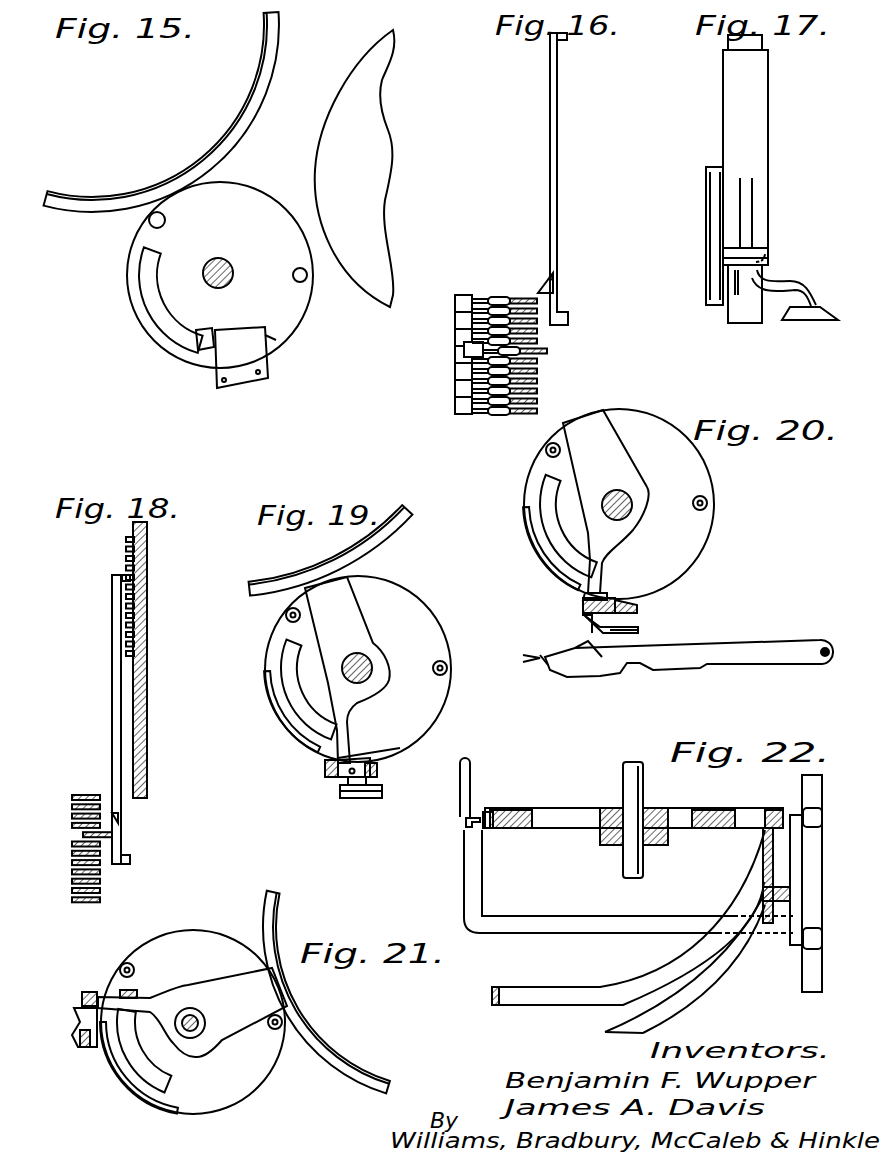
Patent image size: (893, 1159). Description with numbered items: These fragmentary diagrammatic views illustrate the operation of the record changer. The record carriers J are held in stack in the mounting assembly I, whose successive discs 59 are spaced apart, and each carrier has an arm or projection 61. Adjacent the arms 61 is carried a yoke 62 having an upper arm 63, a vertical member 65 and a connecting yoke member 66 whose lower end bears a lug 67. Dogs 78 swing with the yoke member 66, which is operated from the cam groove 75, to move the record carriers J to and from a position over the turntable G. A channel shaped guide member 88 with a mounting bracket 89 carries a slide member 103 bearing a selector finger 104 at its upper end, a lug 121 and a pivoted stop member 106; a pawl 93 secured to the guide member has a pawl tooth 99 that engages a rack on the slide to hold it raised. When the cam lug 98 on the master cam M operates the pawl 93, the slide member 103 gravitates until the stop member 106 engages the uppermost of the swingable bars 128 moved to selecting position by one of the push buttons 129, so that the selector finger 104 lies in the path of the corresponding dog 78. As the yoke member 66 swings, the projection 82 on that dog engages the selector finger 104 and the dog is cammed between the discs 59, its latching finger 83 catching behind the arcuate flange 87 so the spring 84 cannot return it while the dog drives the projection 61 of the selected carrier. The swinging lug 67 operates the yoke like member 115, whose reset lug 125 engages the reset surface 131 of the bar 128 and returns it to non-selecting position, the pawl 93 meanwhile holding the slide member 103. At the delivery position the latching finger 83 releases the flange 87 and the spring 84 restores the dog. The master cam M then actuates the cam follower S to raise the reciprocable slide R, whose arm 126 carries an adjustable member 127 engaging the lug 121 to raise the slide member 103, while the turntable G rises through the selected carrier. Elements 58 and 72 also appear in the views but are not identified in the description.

In FIG. 15, the shaft 58 is at (233, 268).
In FIG. 19, the shaft 58 is at (373, 662).
In FIG. 20, the shaft 58 is at (633, 500).
In FIG. 21, the shaft 58 is at (194, 1008).
In FIG. 15, the discs 59 is at (303, 316).
In FIG. 19, the discs 59 is at (449, 705).
In FIG. 20, the discs 59 is at (710, 537).
In FIG. 21, the discs 59 is at (240, 1112).
In FIG. 15, the record carrier arm 61 is at (200, 340).
In FIG. 19, the record carrier arm 61 is at (352, 714).
In FIG. 20, the record carrier arm 61 is at (587, 567).
In FIG. 21, the record carrier arm 61 is at (150, 996).
In FIG. 15, the yoke 62 is at (268, 370).
In FIG. 15, the upper arm 63 is at (268, 338).
In FIG. 21, the vertical member 65 is at (122, 990).
In FIG. 18, the connecting yoke member 66 is at (148, 718).
In FIG. 19, the connecting yoke member 66 is at (323, 766).
In FIG. 20, the connecting yoke member 66 is at (582, 605).
In FIG. 21, the connecting yoke member 66 is at (86, 992).
In FIG. 20, the lug 67 is at (638, 610).
In FIG. 15, the arcuate slot 72 is at (146, 286).
In FIG. 19, the arcuate slot 72 is at (288, 645).
In FIG. 20, the arcuate slot 72 is at (553, 538).
In FIG. 21, the arcuate slot 72 is at (135, 1065).
In FIG. 22, the cam groove 75 is at (532, 808).
In FIG. 18, the dog 78 is at (126, 556).
In FIG. 19, the dog 78 is at (400, 748).
In FIG. 21, the dog 78 is at (78, 1018).
In FIG. 19, the projection 82 is at (348, 774).
In FIG. 18, the latching finger 83 is at (135, 603).
In FIG. 19, the latching finger 83 is at (352, 760).
In FIG. 20, the latching finger 83 is at (606, 595).
In FIG. 19, the spring 84 is at (378, 772).
In FIG. 21, the spring 84 is at (82, 1048).
In FIG. 19, the arcuate flange 87 is at (266, 700).
In FIG. 20, the arcuate flange 87 is at (524, 508).
In FIG. 21, the arcuate flange 87 is at (140, 1103).
In FIG. 17, the guide member 88 is at (760, 130).
In FIG. 17, the mounting bracket 89 is at (752, 208).
In FIG. 17, the pawl 93 is at (806, 286).
In FIG. 17, the cam lug 98 is at (815, 321).
In FIG. 17, the pawl tooth 99 is at (768, 270).
In FIG. 16, the slide member 103 is at (558, 144).
In FIG. 17, the slide member 103 is at (745, 325).
In FIG. 18, the slide member 103 is at (111, 680).
In FIG. 19, the slide member 103 is at (345, 797).
In FIG. 22, the slide member 103 is at (472, 771).
In FIG. 16, the selector finger 104 is at (567, 38).
In FIG. 18, the selector finger 104 is at (121, 578).
In FIG. 19, the selector finger 104 is at (358, 799).
In FIG. 16, the stop member 106 is at (550, 276).
In FIG. 18, the stop member 106 is at (119, 820).
In FIG. 17, the yoke like member 115 is at (705, 197).
In FIG. 22, the yoke like member 115 is at (630, 763).
In FIG. 18, the lug 121 is at (131, 860).
In FIG. 22, the lug 121 is at (487, 810).
In FIG. 20, the reset lug 125 is at (583, 627).
In FIG. 22, the arm 126 is at (464, 865).
In FIG. 22, the adjustable member 127 is at (465, 822).
In FIG. 16, the swingable bars 128 is at (540, 382).
In FIG. 18, the swingable bars 128 is at (72, 847).
In FIG. 20, the swingable bars 128 is at (728, 645).
In FIG. 16, the push buttons 129 is at (458, 384).
In FIG. 20, the reset surface 131 is at (582, 660).
In FIG. 15, the turntable G is at (368, 40).
In FIG. 15, the mounting assembly I is at (214, 259).
In FIG. 19, the mounting assembly I is at (351, 669).
In FIG. 20, the mounting assembly I is at (607, 504).
In FIG. 21, the mounting assembly I is at (178, 1021).
In FIG. 15, the record carriers J is at (262, 45).
In FIG. 19, the record carriers J is at (388, 530).
In FIG. 21, the record carriers J is at (283, 918).
In FIG. 22, the reciprocable slide R is at (790, 812).
In FIG. 22, the cam follower S is at (762, 893).
In FIG. 22, the master cam M is at (722, 978).